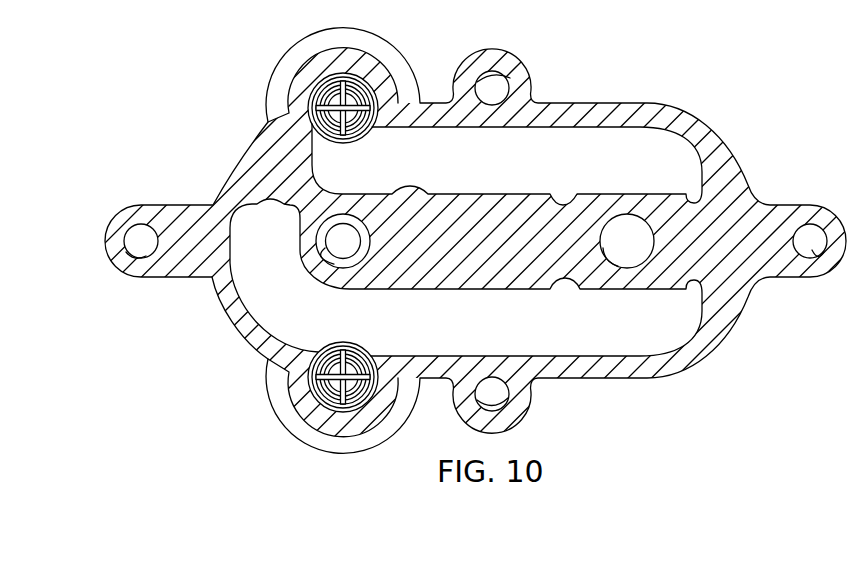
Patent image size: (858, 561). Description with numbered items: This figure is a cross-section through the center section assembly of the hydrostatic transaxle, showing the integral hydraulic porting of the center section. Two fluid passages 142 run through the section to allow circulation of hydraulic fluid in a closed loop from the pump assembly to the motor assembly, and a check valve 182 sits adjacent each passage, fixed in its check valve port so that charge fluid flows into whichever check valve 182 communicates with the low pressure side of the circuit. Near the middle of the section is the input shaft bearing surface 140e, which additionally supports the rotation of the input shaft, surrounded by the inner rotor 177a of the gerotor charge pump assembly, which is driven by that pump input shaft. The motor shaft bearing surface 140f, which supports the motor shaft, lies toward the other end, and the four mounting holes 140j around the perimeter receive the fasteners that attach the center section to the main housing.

The mounting holes 140j is at (142, 250).
The check valves 182 is at (352, 118).
The fluid passages 142 is at (534, 170).
The inner rotor 177a is at (345, 212).
The input shaft bearing surface 140e is at (336, 262).
The motor shaft bearing surface 140f is at (615, 270).